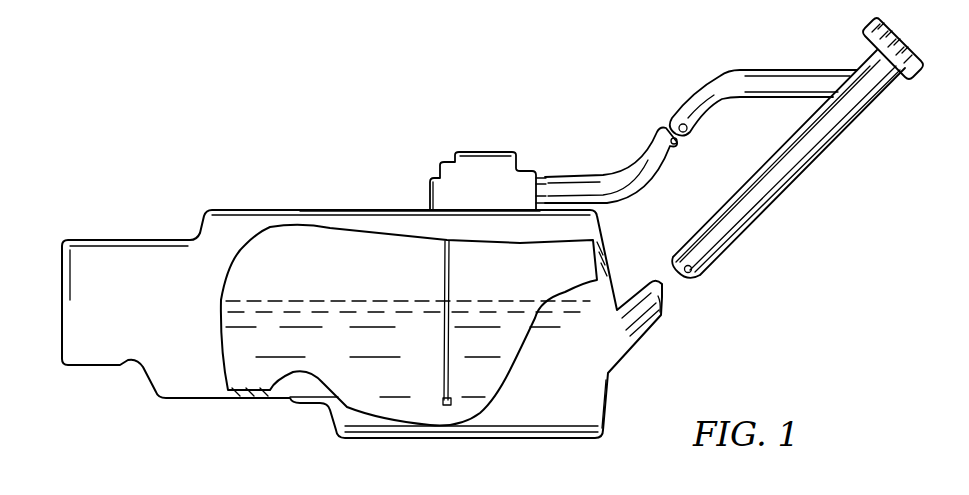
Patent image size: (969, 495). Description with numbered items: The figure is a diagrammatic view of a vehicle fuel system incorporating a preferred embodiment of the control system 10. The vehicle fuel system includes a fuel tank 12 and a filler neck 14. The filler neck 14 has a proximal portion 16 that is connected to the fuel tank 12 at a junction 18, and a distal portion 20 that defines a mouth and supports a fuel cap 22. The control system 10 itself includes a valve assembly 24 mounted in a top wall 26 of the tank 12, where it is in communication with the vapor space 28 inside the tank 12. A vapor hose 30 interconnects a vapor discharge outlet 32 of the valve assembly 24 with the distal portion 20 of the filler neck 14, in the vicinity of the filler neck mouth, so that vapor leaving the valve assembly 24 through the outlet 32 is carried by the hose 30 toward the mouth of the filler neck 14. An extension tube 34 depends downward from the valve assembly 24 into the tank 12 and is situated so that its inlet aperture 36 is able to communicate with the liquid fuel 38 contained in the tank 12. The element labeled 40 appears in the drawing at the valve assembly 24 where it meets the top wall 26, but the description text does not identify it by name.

The control system 10 is at (634, 19).
The fuel tank 12 is at (150, 236).
The filler neck 14 is at (738, 251).
The proximal portion 16 is at (645, 320).
The junction 18 is at (596, 359).
The distal portion 20 is at (849, 98).
The fuel cap 22 is at (866, 26).
The valve assembly 24 is at (520, 150).
The top wall 26 is at (392, 208).
The vapor space 28 is at (328, 262).
The vapor hose 30 is at (703, 73).
The vapor discharge outlet 32 is at (541, 180).
The extension tube 34 is at (452, 280).
The inlet aperture 36 is at (442, 395).
The liquid fuel 38 is at (254, 358).
The cap neck 40 is at (430, 189).